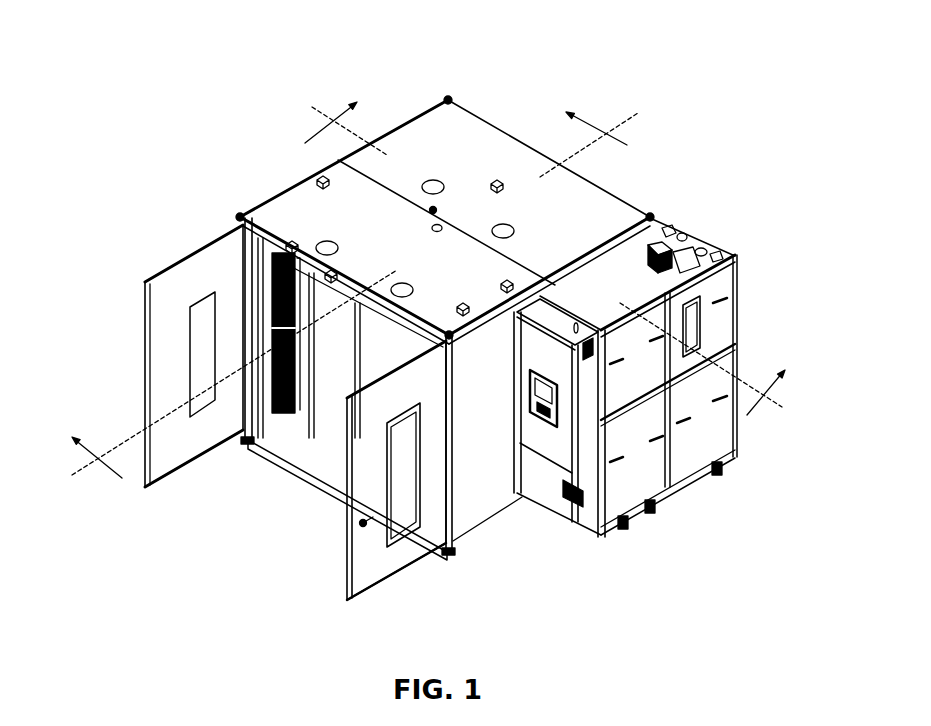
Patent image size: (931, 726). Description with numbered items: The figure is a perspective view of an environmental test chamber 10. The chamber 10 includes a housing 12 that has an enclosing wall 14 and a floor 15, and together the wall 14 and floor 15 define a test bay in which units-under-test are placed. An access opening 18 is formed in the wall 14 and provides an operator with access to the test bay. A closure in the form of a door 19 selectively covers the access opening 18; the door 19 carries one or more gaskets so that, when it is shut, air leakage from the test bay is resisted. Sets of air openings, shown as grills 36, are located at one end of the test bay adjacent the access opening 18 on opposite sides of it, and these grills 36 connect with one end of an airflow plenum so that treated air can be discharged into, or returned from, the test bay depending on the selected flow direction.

The environmental test chamber 10 is at (647, 38).
The housing 12 is at (620, 196).
The enclosing wall 14 is at (262, 440).
The floor 15 is at (310, 425).
The access opening 18 is at (250, 231).
The door 19 is at (152, 268).
The grills 36 is at (280, 423).